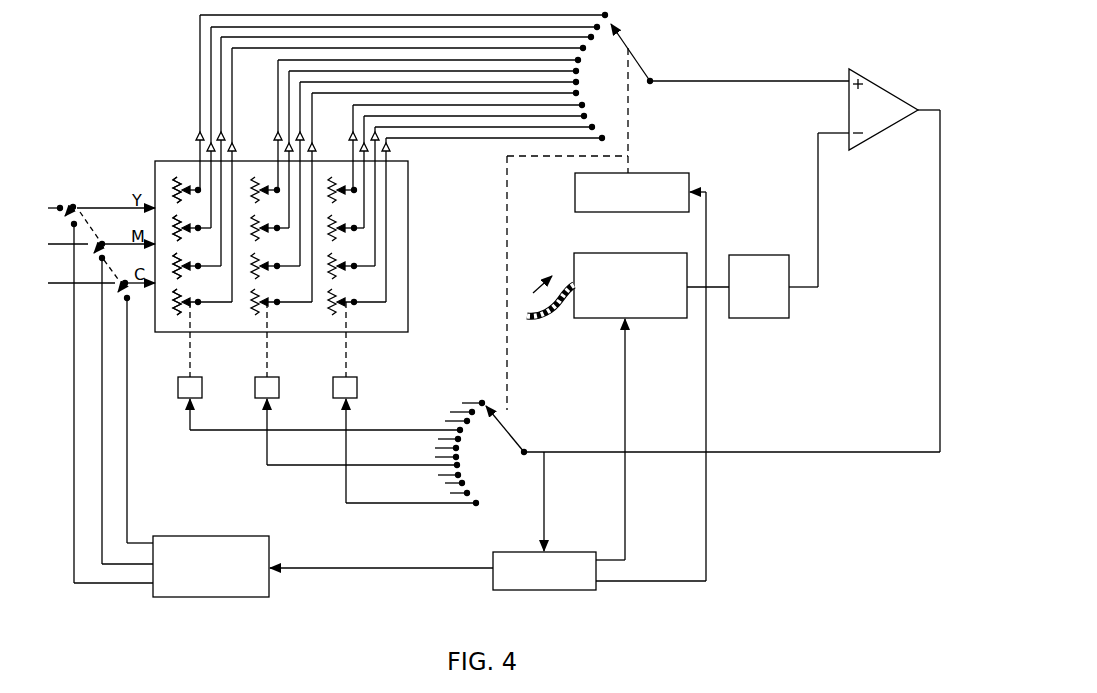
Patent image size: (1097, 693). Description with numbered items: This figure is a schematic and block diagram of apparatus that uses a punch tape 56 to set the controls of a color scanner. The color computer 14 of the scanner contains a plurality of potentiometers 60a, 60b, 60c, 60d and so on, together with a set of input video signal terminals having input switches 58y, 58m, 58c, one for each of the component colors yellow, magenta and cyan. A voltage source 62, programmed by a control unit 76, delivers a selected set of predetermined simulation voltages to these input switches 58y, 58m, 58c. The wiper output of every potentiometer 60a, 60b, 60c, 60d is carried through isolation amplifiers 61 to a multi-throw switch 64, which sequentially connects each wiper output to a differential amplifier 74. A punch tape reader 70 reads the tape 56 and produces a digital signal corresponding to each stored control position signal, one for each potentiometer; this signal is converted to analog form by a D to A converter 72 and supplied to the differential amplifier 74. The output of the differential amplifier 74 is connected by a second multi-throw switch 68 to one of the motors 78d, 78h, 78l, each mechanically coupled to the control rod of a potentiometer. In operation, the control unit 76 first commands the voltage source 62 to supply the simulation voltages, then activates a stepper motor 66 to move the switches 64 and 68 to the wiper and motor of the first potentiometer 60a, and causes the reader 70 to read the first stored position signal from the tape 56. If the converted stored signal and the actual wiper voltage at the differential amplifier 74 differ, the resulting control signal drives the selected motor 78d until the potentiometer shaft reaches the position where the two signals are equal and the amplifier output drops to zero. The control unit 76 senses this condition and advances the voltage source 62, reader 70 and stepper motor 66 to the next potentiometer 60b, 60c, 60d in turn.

The color computer 14 is at (408, 295).
The tape 56 is at (540, 316).
The input switch 58y is at (60, 208).
The input switch 58m is at (88, 244).
The input switch 58c is at (115, 283).
The potentiometer 60a is at (177, 178).
The potentiometer 60b is at (177, 218).
The potentiometer 60c is at (177, 257).
The potentiometer 60d is at (177, 290).
The output lines 61 is at (198, 132).
The voltage source 62 is at (203, 536).
The multi-throw switch 64 is at (730, 54).
The stepper motor 66 is at (667, 173).
The multi-throw switch 68 is at (363, 331).
The punch tape reader 70 is at (655, 320).
The D to A converter 72 is at (753, 320).
The differential amplifier 74 is at (881, 134).
The control unit 76 is at (493, 552).
The motor 78d is at (200, 377).
The motor 78h is at (273, 376).
The motor 78l is at (352, 376).